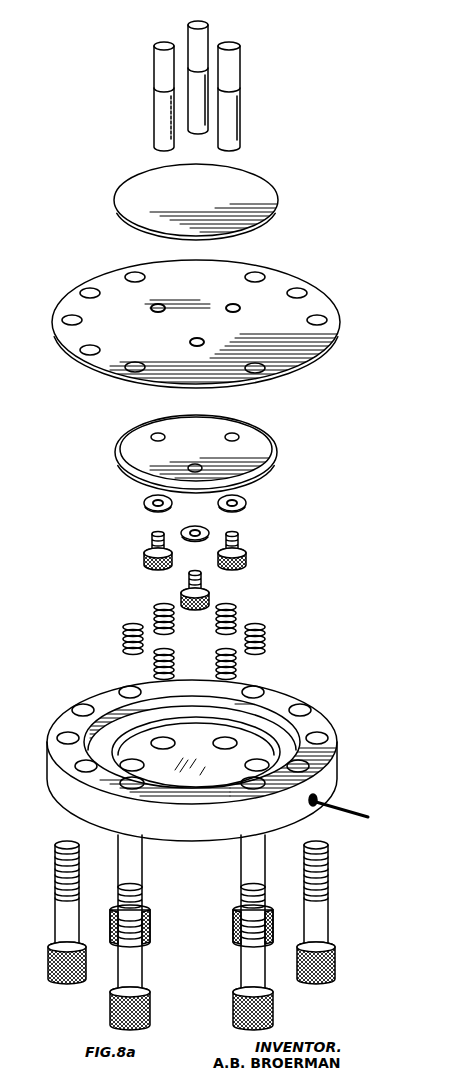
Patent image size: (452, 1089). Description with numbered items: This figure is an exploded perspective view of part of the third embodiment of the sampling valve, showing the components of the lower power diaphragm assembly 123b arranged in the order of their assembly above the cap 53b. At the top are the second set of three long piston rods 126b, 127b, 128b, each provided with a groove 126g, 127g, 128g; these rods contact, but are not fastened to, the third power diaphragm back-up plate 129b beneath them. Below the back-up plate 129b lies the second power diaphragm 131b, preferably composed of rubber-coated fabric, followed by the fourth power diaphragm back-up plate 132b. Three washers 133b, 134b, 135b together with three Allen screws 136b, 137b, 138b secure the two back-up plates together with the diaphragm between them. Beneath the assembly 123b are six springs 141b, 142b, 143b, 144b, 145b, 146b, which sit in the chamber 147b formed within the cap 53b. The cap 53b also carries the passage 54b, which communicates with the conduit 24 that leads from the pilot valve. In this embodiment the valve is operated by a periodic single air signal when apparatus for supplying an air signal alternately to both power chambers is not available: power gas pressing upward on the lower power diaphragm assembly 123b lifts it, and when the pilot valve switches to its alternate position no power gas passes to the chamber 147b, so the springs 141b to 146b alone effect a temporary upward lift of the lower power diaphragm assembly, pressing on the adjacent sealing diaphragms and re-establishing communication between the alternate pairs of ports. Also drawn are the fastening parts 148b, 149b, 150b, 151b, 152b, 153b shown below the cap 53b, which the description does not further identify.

The long piston rod 126b is at (154, 54).
The groove 126g is at (154, 90).
The long piston rod 127b is at (188, 33).
The groove 127g is at (211, 58).
The long piston rod 128b is at (241, 50).
The groove 128g is at (241, 90).
The third power diaphragm back-up plate 129b is at (276, 190).
The second power diaphragm 131b is at (278, 287).
The lower power diaphragm assembly 123b is at (108, 397).
The fourth power diaphragm back-up plate 132b is at (262, 447).
The washer 133b is at (145, 503).
The washer 134b is at (246, 503).
The washer 135b is at (210, 531).
The Allen screw 136b is at (148, 556).
The Allen screw 137b is at (246, 556).
The Allen screw 138b is at (210, 595).
The spring 141b is at (238, 661).
The spring 142b is at (152, 660).
The spring 143b is at (122, 628).
The spring 144b is at (152, 609).
The spring 145b is at (238, 611).
The spring 146b is at (266, 632).
The cap 53b is at (318, 705).
The chamber 147b is at (203, 753).
The passage 54b is at (334, 774).
The conduit 24 is at (347, 820).
The knurled nut 148b is at (238, 912).
The threaded stud 149b is at (142, 908).
The bolt 150b is at (62, 916).
The bolt shank 151b is at (140, 866).
The bolt 152b is at (245, 878).
The bolt 153b is at (329, 918).